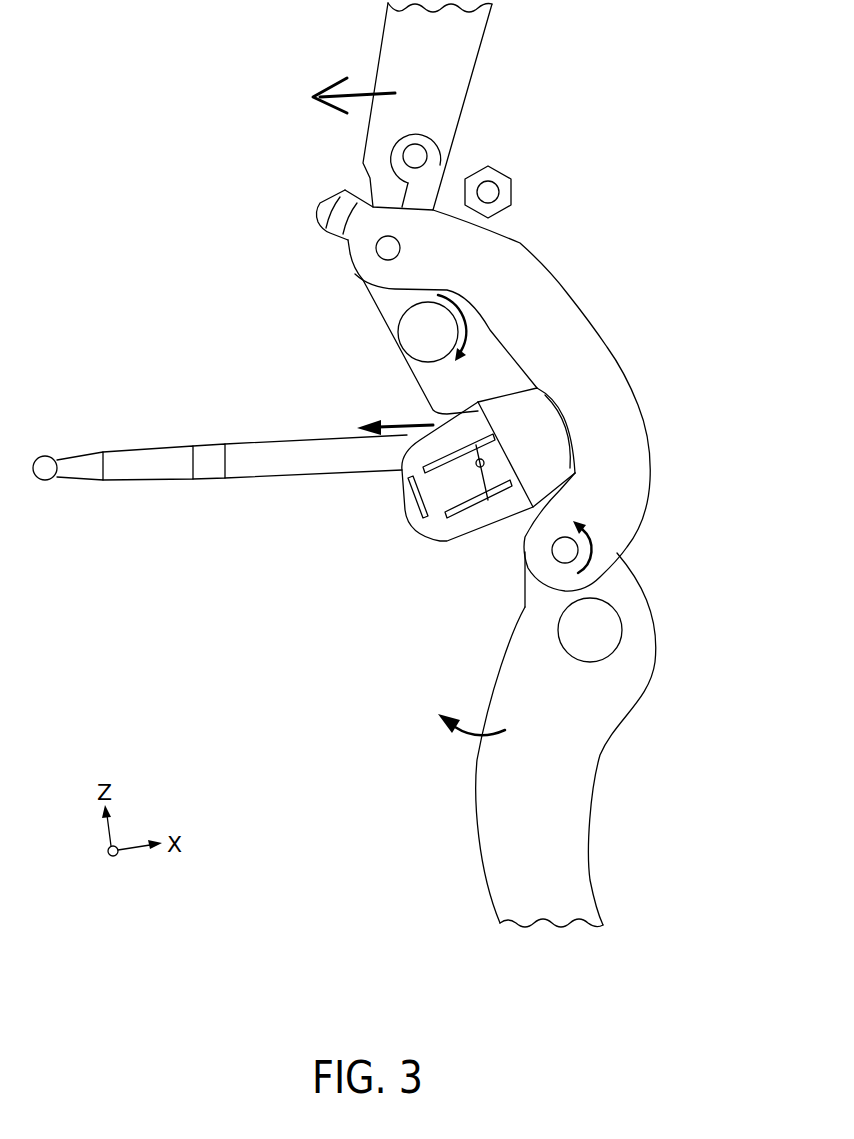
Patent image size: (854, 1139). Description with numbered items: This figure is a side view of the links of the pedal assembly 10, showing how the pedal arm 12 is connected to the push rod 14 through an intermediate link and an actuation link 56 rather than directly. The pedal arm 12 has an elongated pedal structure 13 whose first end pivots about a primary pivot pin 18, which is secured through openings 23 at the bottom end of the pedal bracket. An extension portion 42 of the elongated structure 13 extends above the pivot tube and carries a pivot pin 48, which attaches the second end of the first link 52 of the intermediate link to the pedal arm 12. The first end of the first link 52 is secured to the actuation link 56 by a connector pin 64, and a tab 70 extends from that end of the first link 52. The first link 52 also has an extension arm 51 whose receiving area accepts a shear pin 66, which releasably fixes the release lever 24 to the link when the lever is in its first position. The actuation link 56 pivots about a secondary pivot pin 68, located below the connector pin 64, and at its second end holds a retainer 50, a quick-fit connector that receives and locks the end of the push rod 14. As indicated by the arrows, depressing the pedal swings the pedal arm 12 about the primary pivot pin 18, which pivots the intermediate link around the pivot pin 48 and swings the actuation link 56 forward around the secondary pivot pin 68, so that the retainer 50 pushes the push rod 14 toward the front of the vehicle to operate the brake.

The pedal assembly 10 is at (685, 427).
The pedal arm 12 is at (605, 810).
The elongated pedal structure 13 is at (498, 830).
The push rod 14 is at (160, 467).
The primary pivot pin 18 is at (607, 627).
The openings 23 is at (510, 193).
The release lever 24 is at (467, 42).
The extension portion 42 is at (535, 590).
The pivot pin 48 is at (563, 550).
The retainer 50 is at (430, 492).
The extension arm 51 is at (417, 193).
The first link 52 is at (588, 355).
The actuation link 56 is at (483, 343).
The connector pin 64 is at (383, 250).
The shear pin 66 is at (427, 157).
The secondary pivot pin 68 is at (408, 332).
The tab 70 is at (328, 212).